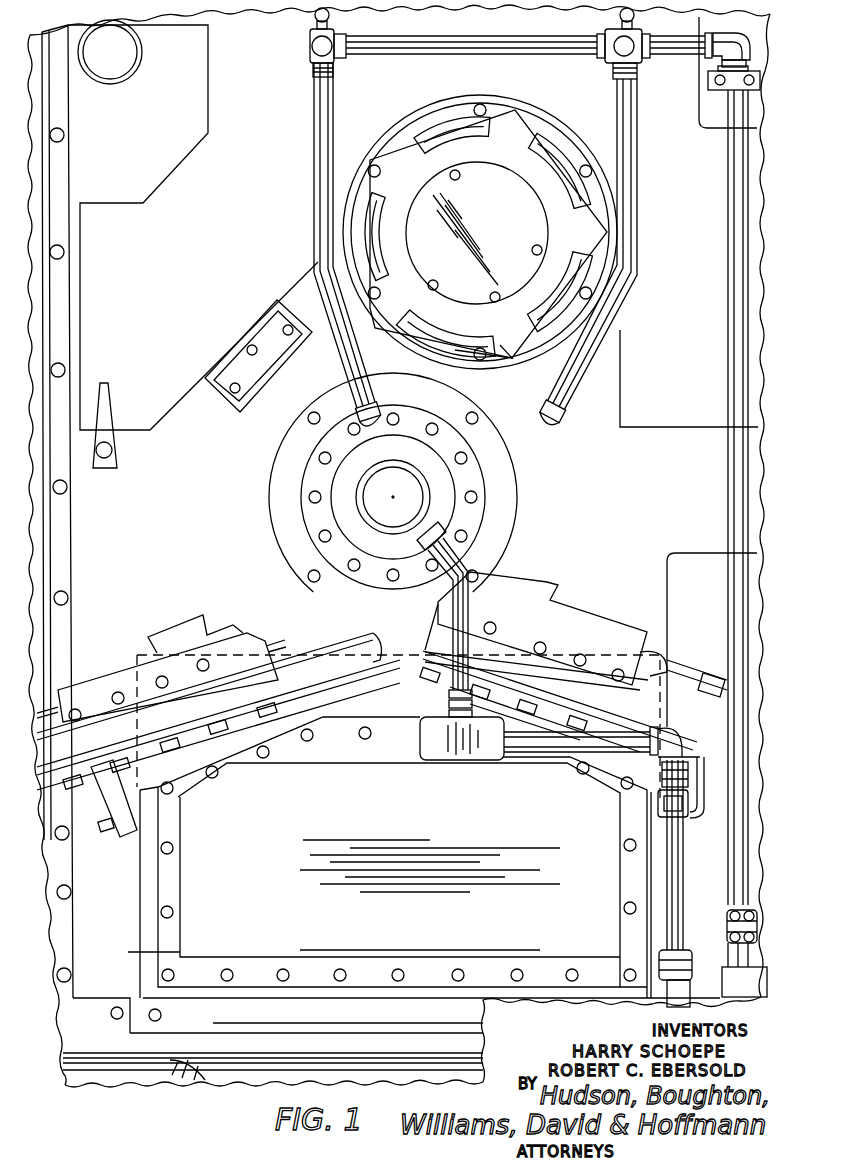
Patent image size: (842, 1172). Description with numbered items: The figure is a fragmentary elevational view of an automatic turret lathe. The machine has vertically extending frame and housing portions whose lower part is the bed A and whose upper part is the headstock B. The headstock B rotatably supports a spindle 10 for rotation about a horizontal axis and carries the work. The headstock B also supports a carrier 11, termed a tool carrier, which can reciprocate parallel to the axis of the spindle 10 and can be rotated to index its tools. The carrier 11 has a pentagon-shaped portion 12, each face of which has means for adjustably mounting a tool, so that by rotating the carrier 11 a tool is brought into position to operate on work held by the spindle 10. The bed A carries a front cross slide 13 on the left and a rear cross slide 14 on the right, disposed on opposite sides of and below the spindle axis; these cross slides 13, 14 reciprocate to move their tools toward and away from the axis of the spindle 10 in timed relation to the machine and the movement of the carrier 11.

The spindle 10 is at (413, 503).
The carrier 11 is at (512, 133).
The pentagon-shaped portion 12 is at (514, 362).
The front cross slide 13 is at (100, 688).
The rear cross slide 14 is at (603, 634).
The bed A is at (96, 962).
The headstock B is at (150, 479).